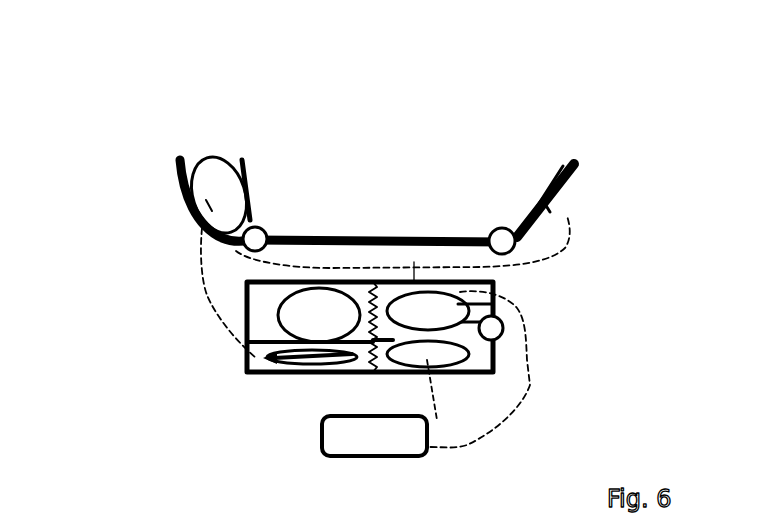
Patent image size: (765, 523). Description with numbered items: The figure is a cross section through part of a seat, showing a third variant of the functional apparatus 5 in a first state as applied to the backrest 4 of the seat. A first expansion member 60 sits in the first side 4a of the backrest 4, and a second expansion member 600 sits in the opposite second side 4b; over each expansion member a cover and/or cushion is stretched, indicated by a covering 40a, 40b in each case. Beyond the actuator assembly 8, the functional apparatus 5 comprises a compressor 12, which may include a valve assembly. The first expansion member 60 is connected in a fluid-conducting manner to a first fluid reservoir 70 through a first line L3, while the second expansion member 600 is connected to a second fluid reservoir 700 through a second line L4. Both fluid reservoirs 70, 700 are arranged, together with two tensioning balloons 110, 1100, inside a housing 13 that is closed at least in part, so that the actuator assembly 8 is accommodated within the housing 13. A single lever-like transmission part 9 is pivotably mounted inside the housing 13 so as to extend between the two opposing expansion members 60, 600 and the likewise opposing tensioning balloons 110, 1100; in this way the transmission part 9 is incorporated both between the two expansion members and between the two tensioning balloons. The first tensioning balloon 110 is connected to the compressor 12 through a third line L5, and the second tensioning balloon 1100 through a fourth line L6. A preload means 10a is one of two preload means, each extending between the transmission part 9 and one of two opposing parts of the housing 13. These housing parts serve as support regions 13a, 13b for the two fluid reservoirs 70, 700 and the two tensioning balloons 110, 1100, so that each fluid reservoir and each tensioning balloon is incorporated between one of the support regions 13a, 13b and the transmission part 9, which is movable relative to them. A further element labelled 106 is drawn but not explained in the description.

The backrest 4 is at (408, 92).
The first side 4a is at (592, 202).
The second side 4b is at (155, 207).
The functional apparatus 5 is at (121, 114).
The actuator assembly 8 is at (632, 318).
The transmission part 9 is at (250, 338).
The preload means 10a is at (371, 286).
The compressor 12 is at (390, 450).
The housing 13 is at (325, 389).
The support region 13a is at (412, 265).
The support region 13b is at (308, 384).
The covering 40a is at (545, 183).
The covering 40b is at (252, 185).
The first expansion member 60 is at (211, 157).
The first fluid reservoir 70 is at (271, 317).
The second fluid reservoir 700 is at (318, 366).
The transmission interface 106 is at (374, 374).
The first tensioning balloon 110 is at (458, 307).
The second expansion member 600 is at (561, 167).
The second tensioning balloon 1100 is at (455, 370).
The first line L3 is at (203, 298).
The second line L4 is at (572, 246).
The third line L5 is at (528, 348).
The fourth line L6 is at (437, 420).